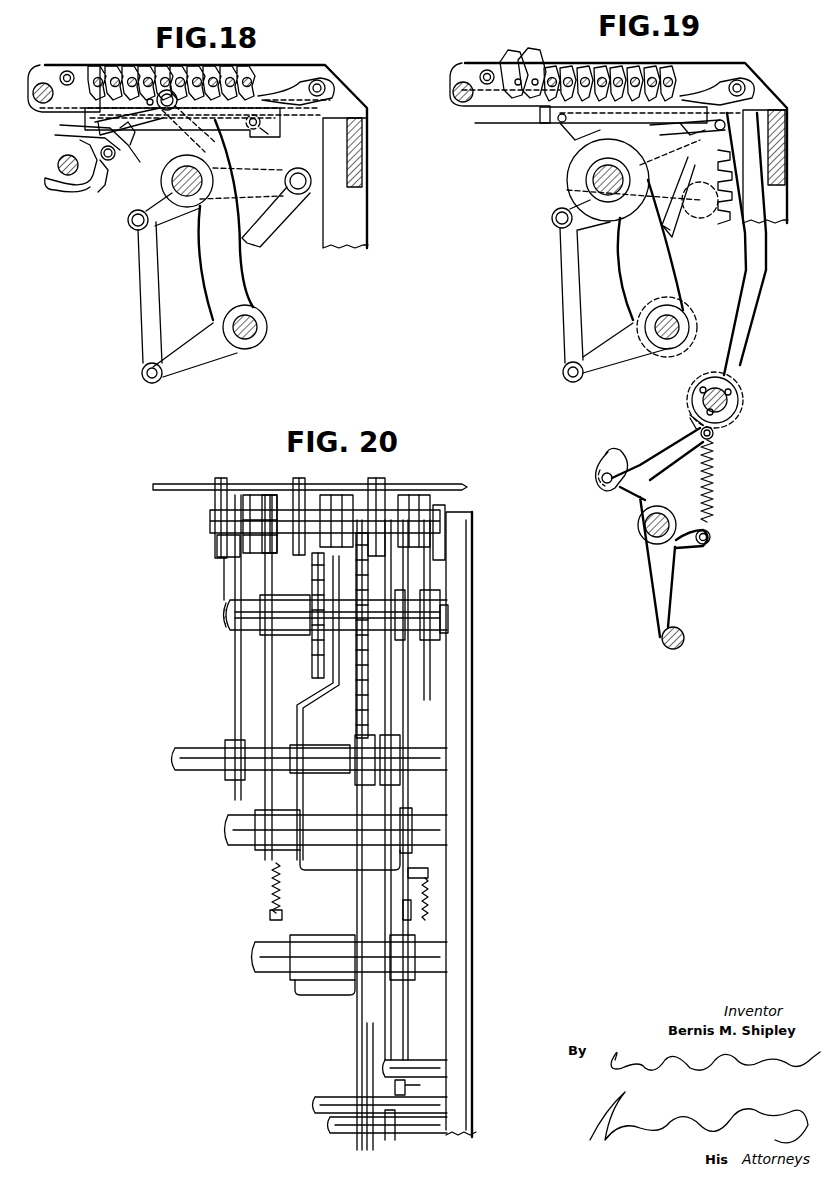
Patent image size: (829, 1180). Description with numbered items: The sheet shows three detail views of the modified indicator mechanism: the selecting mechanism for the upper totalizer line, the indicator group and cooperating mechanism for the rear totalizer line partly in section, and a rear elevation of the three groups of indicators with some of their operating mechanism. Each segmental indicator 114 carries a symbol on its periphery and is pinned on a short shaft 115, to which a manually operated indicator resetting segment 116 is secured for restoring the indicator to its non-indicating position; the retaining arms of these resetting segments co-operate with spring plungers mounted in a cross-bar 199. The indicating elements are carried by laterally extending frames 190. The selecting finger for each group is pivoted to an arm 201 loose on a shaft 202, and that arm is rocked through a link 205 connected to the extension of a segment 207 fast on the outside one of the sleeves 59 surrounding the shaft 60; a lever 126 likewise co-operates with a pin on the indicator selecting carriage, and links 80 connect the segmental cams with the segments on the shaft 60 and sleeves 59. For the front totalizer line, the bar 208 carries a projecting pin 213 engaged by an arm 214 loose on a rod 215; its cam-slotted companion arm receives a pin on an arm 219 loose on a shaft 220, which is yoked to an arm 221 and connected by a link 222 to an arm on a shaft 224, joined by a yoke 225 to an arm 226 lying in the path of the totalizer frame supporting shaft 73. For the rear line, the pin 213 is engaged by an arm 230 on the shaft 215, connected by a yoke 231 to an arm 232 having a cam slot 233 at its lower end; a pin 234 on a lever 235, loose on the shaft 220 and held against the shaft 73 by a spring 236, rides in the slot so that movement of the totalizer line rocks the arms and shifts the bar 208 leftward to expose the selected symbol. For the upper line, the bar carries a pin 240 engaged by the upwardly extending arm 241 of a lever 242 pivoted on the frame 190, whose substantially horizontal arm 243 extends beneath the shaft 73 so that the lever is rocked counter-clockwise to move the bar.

In FIG. 19, the sleeves 59 is at (600, 170).
In FIG. 20, the sleeves 59 is at (288, 625).
In FIG. 18, the shaft 60 is at (180, 186).
In FIG. 19, the shaft 60 is at (612, 197).
In FIG. 20, the shaft 60 is at (225, 615).
In FIG. 18, the totalizer frame supporting shaft 73 is at (57, 167).
In FIG. 19, the totalizer frame supporting shaft 73 is at (683, 628).
In FIG. 20, the totalizer frame supporting shaft 73 is at (322, 1097).
In FIG. 18, the links 80 is at (277, 215).
In FIG. 19, the links 80 is at (668, 265).
In FIG. 20, the links 80 is at (428, 700).
In FIG. 19, the segmental indicator 114 is at (600, 66).
In FIG. 20, the segmental indicator 114 is at (258, 495).
In FIG. 20, the short shaft 115 is at (272, 495).
In FIG. 19, the indicator resetting segment 116 is at (545, 58).
In FIG. 20, the indicator resetting segment 116 is at (219, 480).
In FIG. 18, the lever 126 is at (278, 150).
In FIG. 20, the lever 126 is at (440, 614).
In FIG. 18, the laterally extending frames 190 is at (296, 76).
In FIG. 20, the laterally extending frames 190 is at (293, 490).
In FIG. 20, the cross-bar 199 is at (216, 548).
In FIG. 18, the arm 201 is at (238, 283).
In FIG. 19, the arm 201 is at (630, 290).
In FIG. 20, the arm 201 is at (235, 653).
In FIG. 18, the shaft 202 is at (235, 340).
In FIG. 19, the shaft 202 is at (655, 340).
In FIG. 20, the shaft 202 is at (195, 748).
In FIG. 18, the link 205 is at (140, 258).
In FIG. 19, the link 205 is at (577, 260).
In FIG. 19, the segment 207 is at (718, 262).
In FIG. 18, the bar 208 is at (235, 140).
In FIG. 19, the bar 208 is at (632, 125).
In FIG. 19, the projecting pin 213 is at (700, 150).
In FIG. 20, the arm 214 is at (266, 712).
In FIG. 19, the rod 215 is at (735, 410).
In FIG. 20, the rod 215 is at (232, 848).
In FIG. 20, the arm 219 is at (293, 888).
In FIG. 19, the shaft 220 is at (660, 512).
In FIG. 20, the shaft 220 is at (268, 978).
In FIG. 20, the arm 221 is at (363, 998).
In FIG. 20, the link 222 is at (373, 1050).
In FIG. 20, the shaft 224 is at (335, 1133).
In FIG. 20, the yoke 225 is at (405, 1138).
In FIG. 20, the arm 226 is at (408, 1088).
In FIG. 19, the arm 230 is at (763, 315).
In FIG. 20, the arm 230 is at (312, 700).
In FIG. 19, the yoke 231 is at (680, 410).
In FIG. 19, the arm 232 is at (635, 434).
In FIG. 20, the arm 232 is at (402, 888).
In FIG. 19, the cam slot 233 is at (600, 455).
In FIG. 19, the pin 234 is at (615, 476).
In FIG. 20, the pin 234 is at (400, 910).
In FIG. 19, the lever 235 is at (672, 566).
In FIG. 20, the lever 235 is at (410, 995).
In FIG. 19, the spring 236 is at (713, 460).
In FIG. 18, the pin 240 is at (85, 140).
In FIG. 18, the arm 241 is at (128, 140).
In FIG. 18, the lever 242 is at (104, 183).
In FIG. 18, the horizontal arm 243 is at (80, 192).